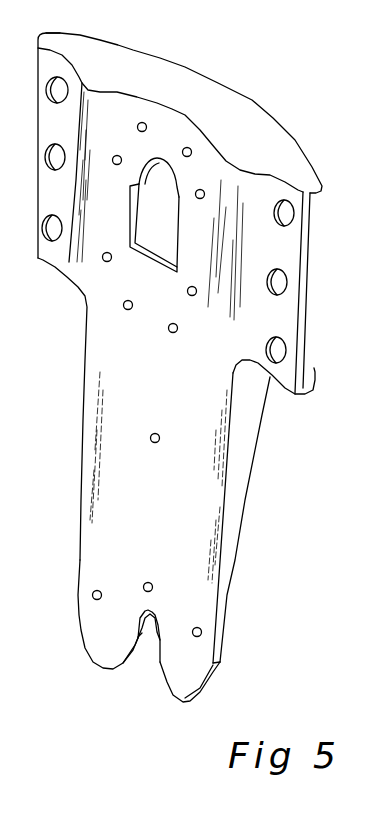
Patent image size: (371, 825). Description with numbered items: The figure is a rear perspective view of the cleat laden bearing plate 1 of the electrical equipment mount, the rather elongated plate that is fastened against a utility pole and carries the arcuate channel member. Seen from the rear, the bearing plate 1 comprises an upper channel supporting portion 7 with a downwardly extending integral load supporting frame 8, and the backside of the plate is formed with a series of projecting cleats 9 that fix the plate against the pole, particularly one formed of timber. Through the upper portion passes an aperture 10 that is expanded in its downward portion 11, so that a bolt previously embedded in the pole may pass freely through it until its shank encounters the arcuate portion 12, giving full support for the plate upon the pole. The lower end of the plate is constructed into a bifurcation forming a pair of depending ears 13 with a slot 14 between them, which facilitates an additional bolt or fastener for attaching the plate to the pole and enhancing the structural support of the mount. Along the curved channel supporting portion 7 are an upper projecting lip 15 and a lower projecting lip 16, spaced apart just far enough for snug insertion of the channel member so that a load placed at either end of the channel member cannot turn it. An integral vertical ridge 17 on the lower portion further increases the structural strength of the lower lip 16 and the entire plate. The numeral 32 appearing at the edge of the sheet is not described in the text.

The bearing plate 1 is at (68, 294).
The channel supporting portion 7 is at (257, 245).
The load supporting frame 8 is at (195, 500).
The projecting cleats 9 is at (137, 120).
The aperture 10 is at (180, 177).
The expanded downward portion 11 is at (181, 226).
The arcuate portion 12 is at (153, 156).
The depending ears 13 is at (103, 670).
The slot 14 is at (155, 662).
The upper projecting lip 15 is at (273, 118).
The lower projecting lip 16 is at (313, 368).
The vertical ridge 17 is at (265, 412).
The adjacent figure numeral 32 is at (4, 714).